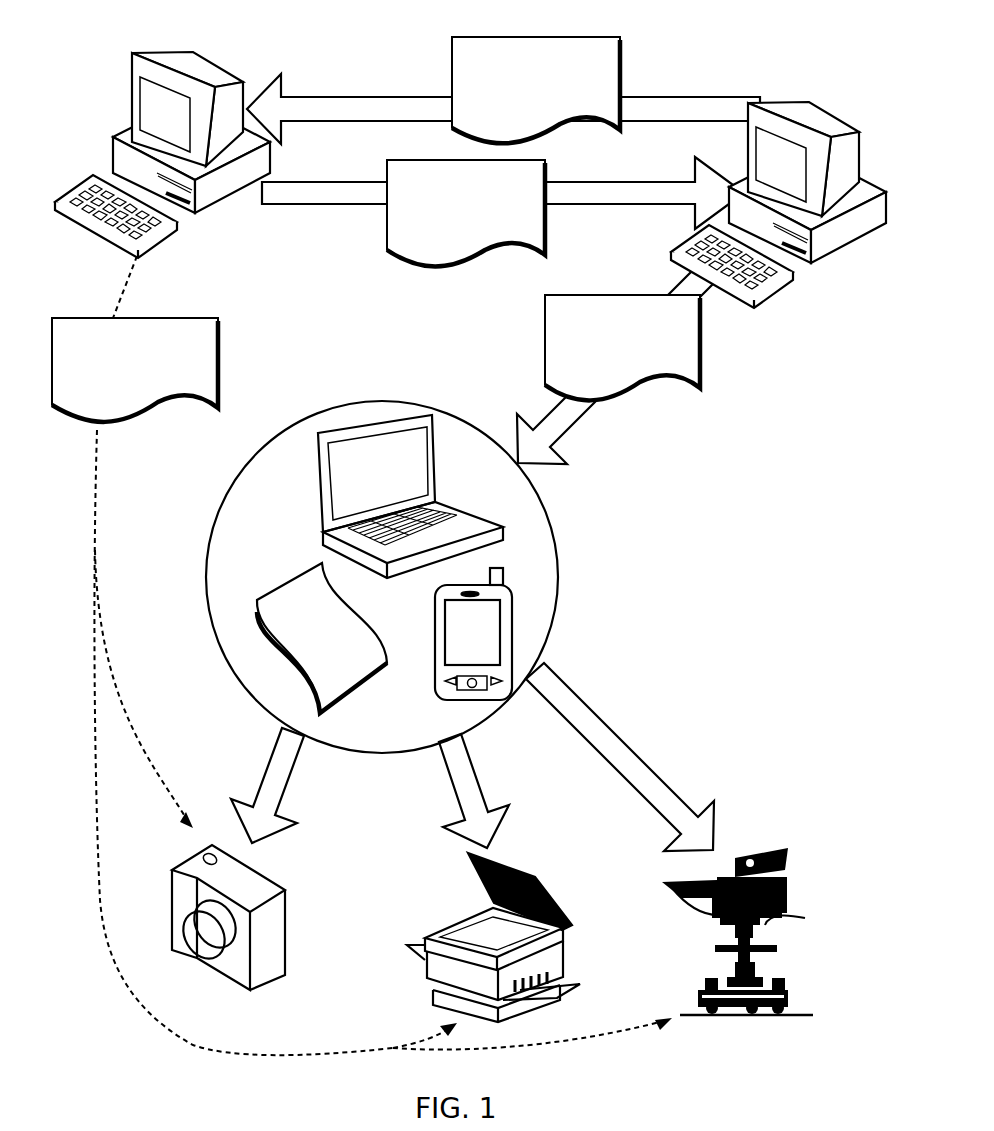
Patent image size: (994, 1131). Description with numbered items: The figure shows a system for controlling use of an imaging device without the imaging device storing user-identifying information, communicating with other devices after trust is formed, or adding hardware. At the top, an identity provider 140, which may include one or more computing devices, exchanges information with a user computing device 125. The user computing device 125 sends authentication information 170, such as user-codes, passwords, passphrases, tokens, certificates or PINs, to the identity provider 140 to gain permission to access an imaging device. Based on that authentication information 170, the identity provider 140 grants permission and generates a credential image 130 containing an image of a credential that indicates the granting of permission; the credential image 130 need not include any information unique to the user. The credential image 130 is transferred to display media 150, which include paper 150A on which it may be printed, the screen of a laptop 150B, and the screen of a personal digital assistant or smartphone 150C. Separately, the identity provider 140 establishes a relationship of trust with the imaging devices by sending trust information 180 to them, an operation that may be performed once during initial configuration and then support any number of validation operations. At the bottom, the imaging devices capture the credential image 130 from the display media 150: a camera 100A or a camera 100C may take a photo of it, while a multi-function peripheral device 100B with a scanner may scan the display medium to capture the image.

The identity provider 140 is at (137, 53).
The user computing device 125 is at (812, 100).
The authentication information 170 is at (453, 38).
The credential image 130 is at (387, 237).
The trust information 180 is at (220, 348).
The display media 150 is at (240, 467).
The paper 150A is at (285, 582).
The laptop 150B is at (323, 532).
The personal digital assistant/smartphone 150C is at (442, 692).
The imaging device 100A is at (283, 888).
The imaging device 100B is at (423, 938).
The imaging device 100C is at (790, 862).